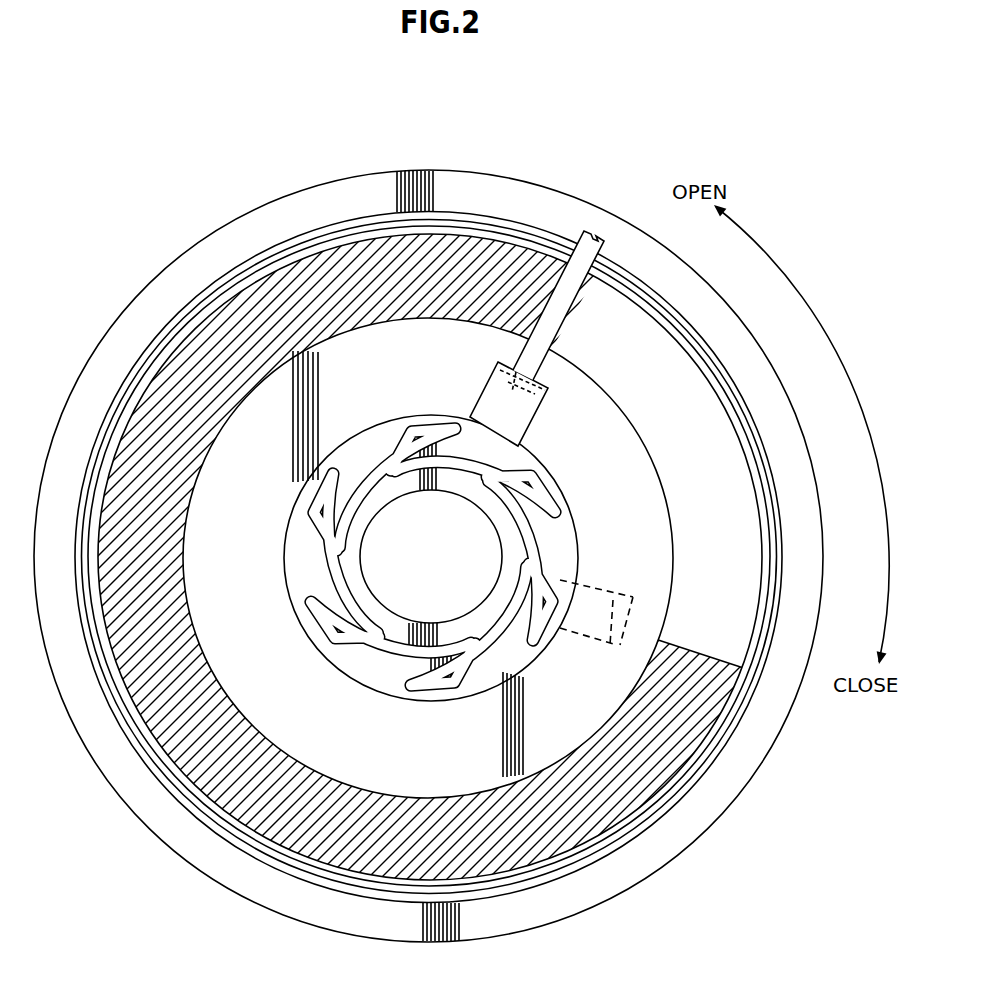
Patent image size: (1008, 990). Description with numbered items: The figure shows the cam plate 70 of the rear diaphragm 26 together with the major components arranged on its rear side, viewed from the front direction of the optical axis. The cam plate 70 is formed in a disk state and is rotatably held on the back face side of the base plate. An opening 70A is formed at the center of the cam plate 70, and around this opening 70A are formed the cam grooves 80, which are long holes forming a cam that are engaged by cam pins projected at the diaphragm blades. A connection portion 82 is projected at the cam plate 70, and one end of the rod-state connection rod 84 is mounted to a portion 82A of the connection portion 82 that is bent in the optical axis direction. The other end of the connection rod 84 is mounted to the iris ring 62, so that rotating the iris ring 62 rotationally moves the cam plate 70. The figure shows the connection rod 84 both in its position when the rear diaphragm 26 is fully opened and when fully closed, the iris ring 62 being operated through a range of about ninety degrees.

The iris ring 62 is at (536, 196).
The rear diaphragm 26 is at (293, 631).
The cam plate 70 is at (565, 534).
The opening 70A is at (467, 612).
The cam grooves 80 is at (414, 436).
The connection portion 82 is at (488, 396).
The bent portion of connection portion 82A is at (540, 383).
The connection rod 84 is at (553, 321).